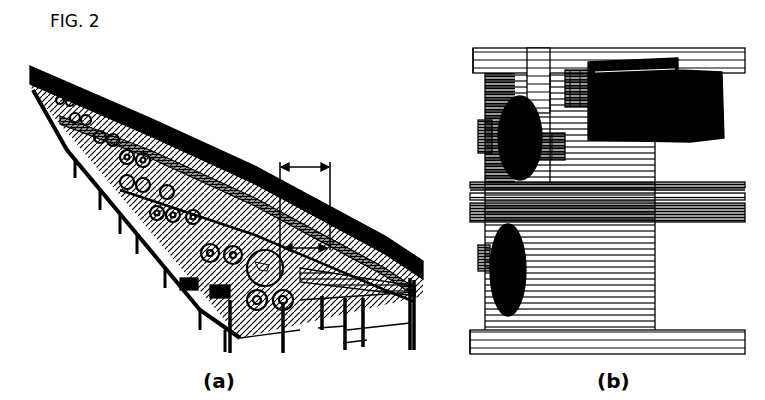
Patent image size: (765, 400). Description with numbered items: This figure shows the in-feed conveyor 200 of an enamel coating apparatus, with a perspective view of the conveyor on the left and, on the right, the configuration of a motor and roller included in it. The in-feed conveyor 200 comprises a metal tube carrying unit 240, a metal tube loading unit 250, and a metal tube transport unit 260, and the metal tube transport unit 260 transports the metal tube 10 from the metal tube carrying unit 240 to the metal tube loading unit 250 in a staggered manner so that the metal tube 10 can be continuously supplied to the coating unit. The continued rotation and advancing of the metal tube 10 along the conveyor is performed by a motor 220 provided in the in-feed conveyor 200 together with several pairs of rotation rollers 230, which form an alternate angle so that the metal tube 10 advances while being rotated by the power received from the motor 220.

The metal tube 10 is at (165, 110).
The in-feed conveyor 200 is at (249, 117).
The motor 220 is at (690, 140).
The rotation rollers 230 is at (507, 262).
The metal tube carrying unit 240 is at (305, 208).
The metal tube loading unit 250 is at (300, 278).
The metal tube transport unit 260 is at (287, 253).